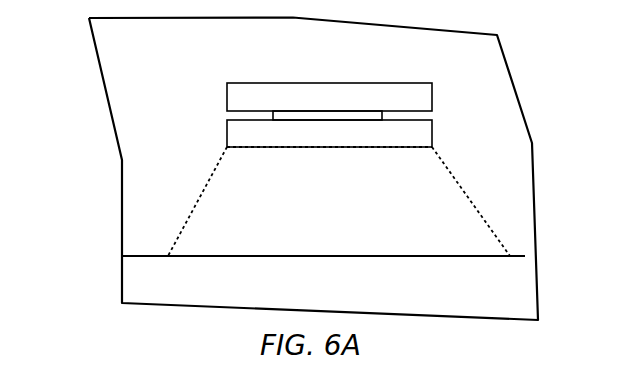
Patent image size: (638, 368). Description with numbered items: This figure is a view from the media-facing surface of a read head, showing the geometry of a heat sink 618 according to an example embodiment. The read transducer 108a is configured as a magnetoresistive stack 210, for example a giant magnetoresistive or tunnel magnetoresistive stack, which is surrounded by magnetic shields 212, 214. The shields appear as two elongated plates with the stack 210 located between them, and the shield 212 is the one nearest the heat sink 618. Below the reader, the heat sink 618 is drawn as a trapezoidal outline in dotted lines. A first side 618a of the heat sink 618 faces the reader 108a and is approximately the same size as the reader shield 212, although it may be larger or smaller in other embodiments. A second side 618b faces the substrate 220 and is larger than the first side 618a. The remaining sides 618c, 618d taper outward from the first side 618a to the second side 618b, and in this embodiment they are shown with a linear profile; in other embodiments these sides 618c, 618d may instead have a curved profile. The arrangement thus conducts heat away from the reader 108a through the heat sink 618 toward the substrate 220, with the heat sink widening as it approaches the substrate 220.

The read transducer 108a is at (126, 115).
The magnetoresistive stack 210 is at (330, 118).
The magnetic shield 212 is at (227, 131).
The magnetic shield 214 is at (227, 90).
The substrate 220 is at (122, 278).
The heat sink 618 is at (333, 219).
The first side 618a is at (337, 149).
The second side 618b is at (307, 256).
The tapered side 618c is at (207, 179).
The tapered side 618d is at (455, 178).